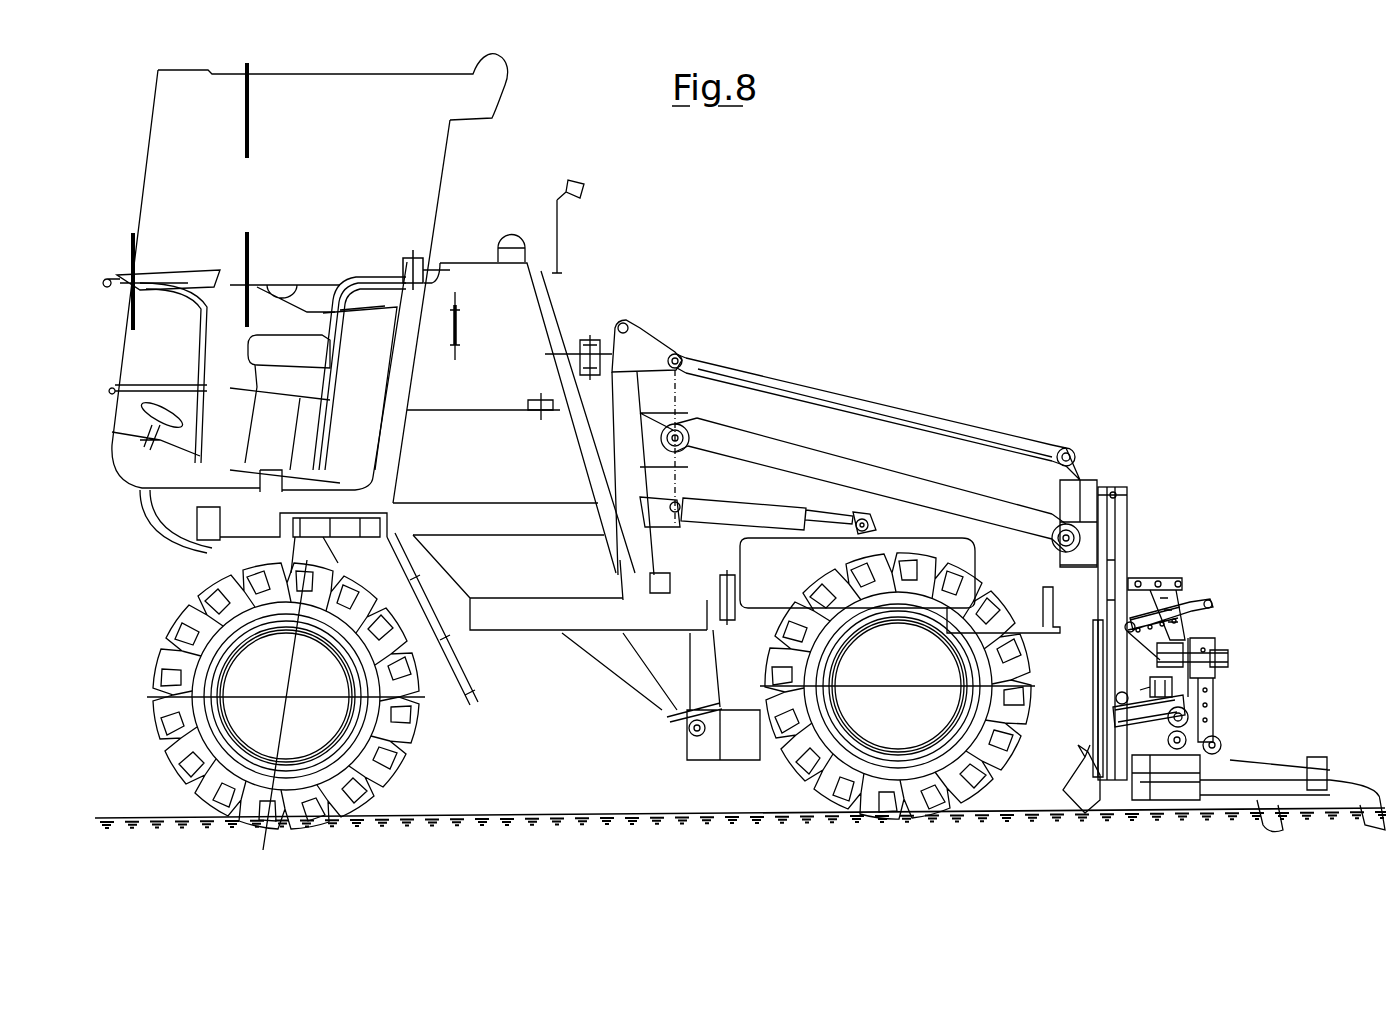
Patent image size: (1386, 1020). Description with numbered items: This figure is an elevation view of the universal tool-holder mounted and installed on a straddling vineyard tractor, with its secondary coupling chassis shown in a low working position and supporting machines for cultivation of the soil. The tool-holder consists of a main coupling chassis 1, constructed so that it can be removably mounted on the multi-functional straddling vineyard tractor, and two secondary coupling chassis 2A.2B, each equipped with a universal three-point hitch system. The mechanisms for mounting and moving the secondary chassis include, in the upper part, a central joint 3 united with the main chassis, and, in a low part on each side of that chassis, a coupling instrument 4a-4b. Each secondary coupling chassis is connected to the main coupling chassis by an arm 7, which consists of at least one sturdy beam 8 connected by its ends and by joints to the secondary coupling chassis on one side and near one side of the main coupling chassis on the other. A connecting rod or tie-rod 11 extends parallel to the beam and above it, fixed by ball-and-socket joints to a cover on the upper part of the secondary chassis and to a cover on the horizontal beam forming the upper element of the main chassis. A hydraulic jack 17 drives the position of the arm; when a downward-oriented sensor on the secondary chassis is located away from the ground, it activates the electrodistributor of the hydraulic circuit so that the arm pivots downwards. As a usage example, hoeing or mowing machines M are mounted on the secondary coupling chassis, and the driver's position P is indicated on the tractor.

The main coupling chassis 1 is at (658, 321).
The driver's position P is at (520, 313).
The central joint 3 is at (603, 343).
The connecting rod or tie-rod 11 is at (830, 397).
The arm 7 is at (899, 393).
The sturdy beam 8 is at (922, 492).
The jack 17 is at (703, 507).
The secondary coupling chassis 2A.2B is at (1133, 511).
The machines M is at (1230, 688).
The coupling instrument 4a-4b is at (727, 592).